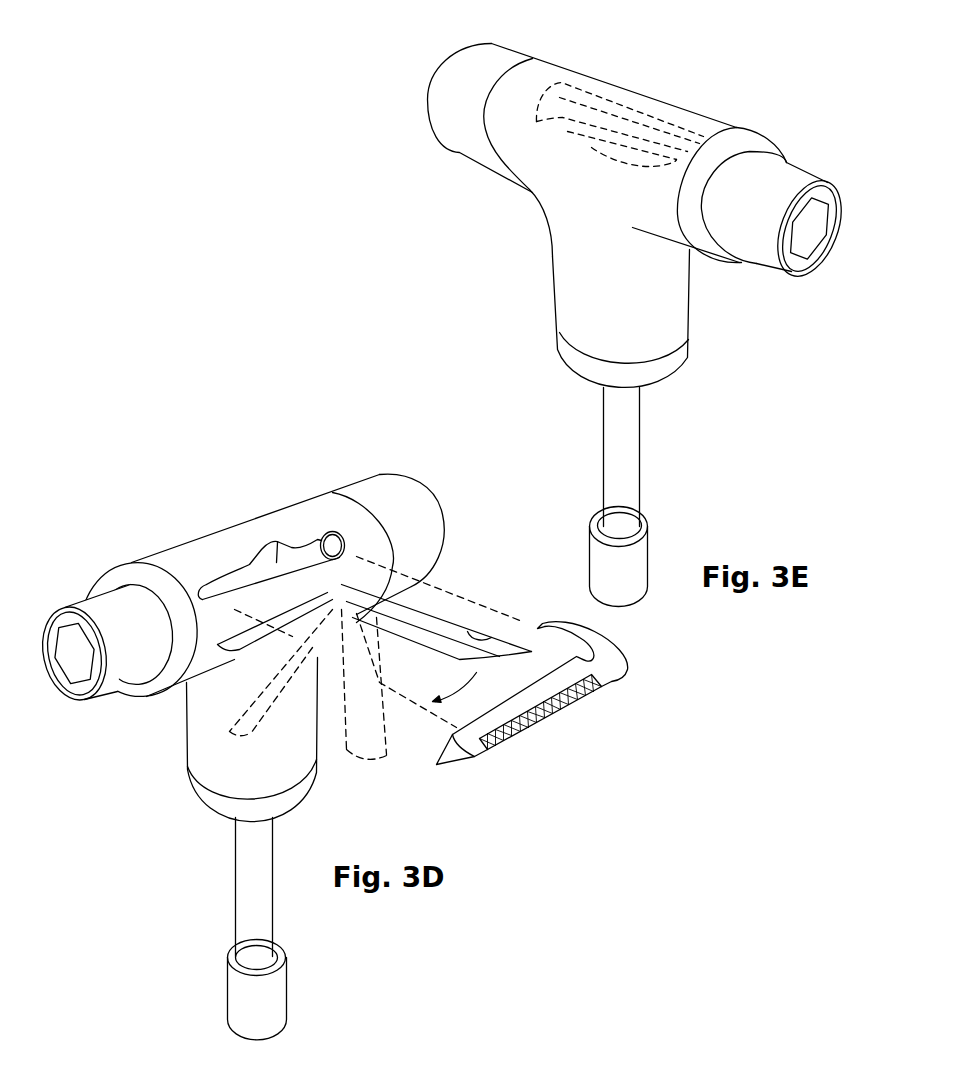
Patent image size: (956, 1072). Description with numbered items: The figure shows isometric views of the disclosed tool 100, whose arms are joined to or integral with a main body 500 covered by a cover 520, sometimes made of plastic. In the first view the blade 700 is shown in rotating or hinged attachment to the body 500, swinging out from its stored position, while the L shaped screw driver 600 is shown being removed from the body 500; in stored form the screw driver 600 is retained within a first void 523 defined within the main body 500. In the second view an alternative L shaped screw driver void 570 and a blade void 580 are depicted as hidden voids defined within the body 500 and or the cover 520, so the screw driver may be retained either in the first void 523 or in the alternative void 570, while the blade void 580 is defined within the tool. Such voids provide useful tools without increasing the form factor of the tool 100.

In FIG. 3E, the embodiment 100 is at (638, 322).
In FIG. 3D, the embodiment 100 is at (282, 719).
In FIG. 3E, the main body 500 is at (690, 98).
In FIG. 3D, the main body 500 is at (249, 509).
In FIG. 3E, the cover 520 is at (602, 203).
In FIG. 3D, the void 523 is at (277, 560).
In FIG. 3E, the L shaped screw driver void 570 is at (586, 92).
In FIG. 3E, the blade void 580 is at (597, 141).
In FIG. 3D, the L shaped screw driver 600 is at (589, 704).
In FIG. 3D, the blade 700 is at (419, 638).